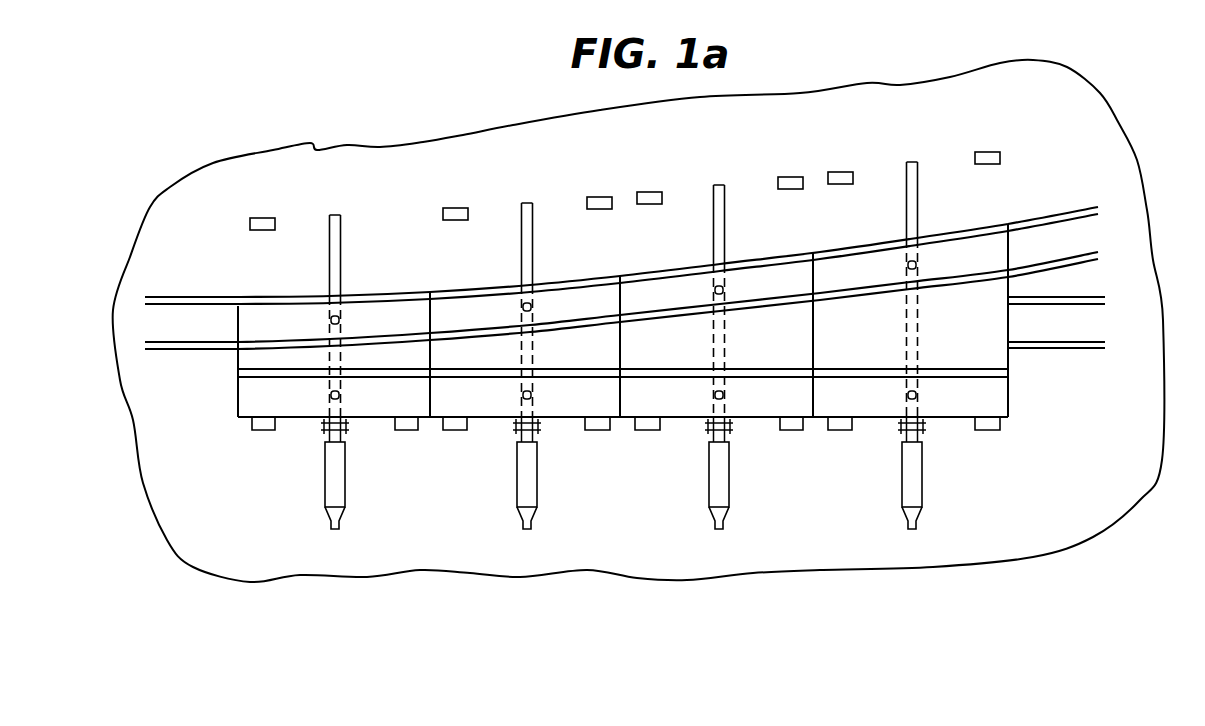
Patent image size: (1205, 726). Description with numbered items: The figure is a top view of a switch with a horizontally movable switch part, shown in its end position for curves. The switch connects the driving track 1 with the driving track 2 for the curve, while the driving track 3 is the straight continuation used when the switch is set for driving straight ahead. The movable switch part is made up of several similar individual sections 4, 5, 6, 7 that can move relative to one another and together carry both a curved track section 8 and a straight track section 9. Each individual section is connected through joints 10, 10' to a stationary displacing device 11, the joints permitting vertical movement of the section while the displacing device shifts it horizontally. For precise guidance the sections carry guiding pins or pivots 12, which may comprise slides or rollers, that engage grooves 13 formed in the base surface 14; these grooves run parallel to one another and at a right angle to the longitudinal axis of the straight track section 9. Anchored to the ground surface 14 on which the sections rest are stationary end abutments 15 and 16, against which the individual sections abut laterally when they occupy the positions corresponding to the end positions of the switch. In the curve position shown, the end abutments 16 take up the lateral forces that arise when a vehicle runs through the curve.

The driving track 1 is at (202, 330).
The driving track 2 is at (1063, 233).
The driving track 3 is at (1083, 333).
The individual section 4 is at (255, 360).
The individual section 5 is at (509, 362).
The individual section 6 is at (692, 356).
The individual section 7 is at (877, 346).
The curved track section 8 is at (392, 302).
The straight track section 9 is at (292, 400).
The joint 10 is at (604, 454).
The joint 10' is at (593, 533).
The stationary displacing device 11 is at (340, 478).
The guiding pin or pivot 12 is at (329, 318).
The groove 13 is at (330, 260).
The base surface 14 is at (1103, 128).
The stationary end abutment 15 is at (267, 222).
The stationary end abutment 16 is at (260, 433).